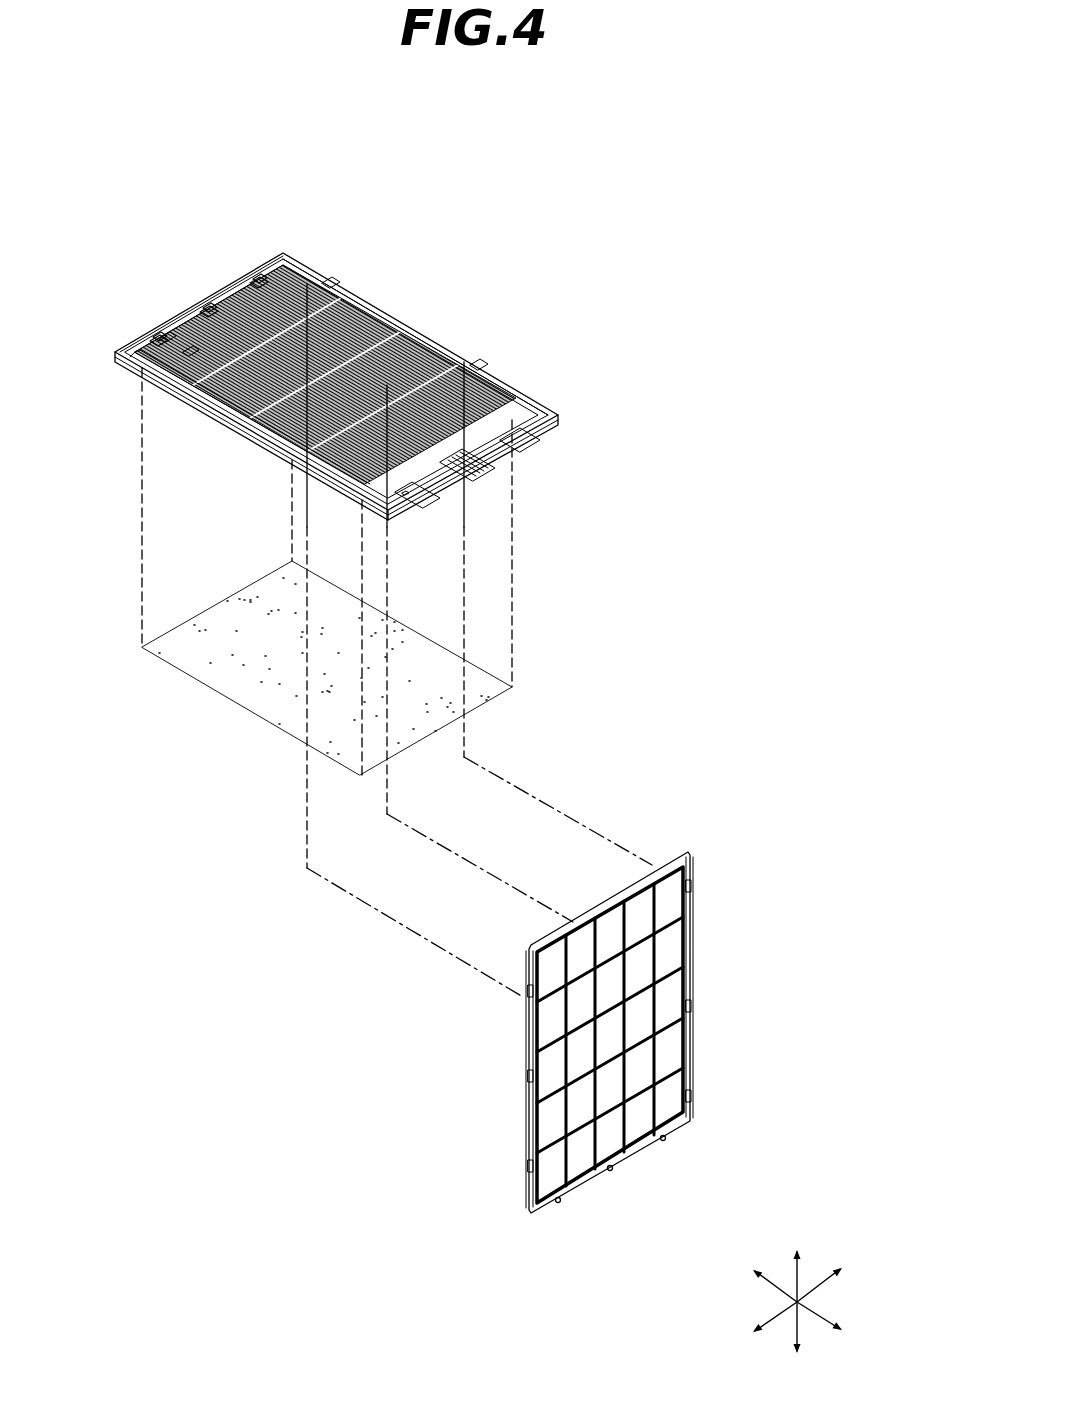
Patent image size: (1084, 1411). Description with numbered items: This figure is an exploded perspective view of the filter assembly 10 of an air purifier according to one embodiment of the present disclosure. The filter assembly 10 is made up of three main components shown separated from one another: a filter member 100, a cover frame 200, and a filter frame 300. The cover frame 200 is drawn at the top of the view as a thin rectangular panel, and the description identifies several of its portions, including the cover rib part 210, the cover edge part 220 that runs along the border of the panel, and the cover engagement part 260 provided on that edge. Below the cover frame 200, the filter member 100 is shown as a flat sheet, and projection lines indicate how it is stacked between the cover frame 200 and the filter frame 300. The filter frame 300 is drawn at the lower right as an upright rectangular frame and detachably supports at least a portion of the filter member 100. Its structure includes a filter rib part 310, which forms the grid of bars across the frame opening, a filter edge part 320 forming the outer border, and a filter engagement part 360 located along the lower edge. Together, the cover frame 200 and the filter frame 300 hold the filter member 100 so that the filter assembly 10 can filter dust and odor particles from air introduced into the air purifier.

The filter assembly 10 is at (430, 176).
The filter member 100 is at (222, 680).
The cover frame 200 is at (424, 284).
The cover rib part 210 is at (325, 284).
The cover edge part 220 is at (180, 322).
The cover engagement part 260 is at (257, 282).
The filter frame 300 is at (726, 950).
The filter rib part 310 is at (654, 1112).
The filter edge part 320 is at (695, 1040).
The filter engagement part 360 is at (562, 1201).